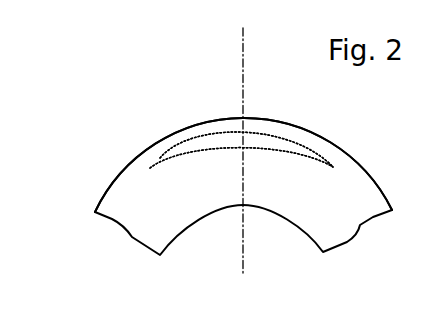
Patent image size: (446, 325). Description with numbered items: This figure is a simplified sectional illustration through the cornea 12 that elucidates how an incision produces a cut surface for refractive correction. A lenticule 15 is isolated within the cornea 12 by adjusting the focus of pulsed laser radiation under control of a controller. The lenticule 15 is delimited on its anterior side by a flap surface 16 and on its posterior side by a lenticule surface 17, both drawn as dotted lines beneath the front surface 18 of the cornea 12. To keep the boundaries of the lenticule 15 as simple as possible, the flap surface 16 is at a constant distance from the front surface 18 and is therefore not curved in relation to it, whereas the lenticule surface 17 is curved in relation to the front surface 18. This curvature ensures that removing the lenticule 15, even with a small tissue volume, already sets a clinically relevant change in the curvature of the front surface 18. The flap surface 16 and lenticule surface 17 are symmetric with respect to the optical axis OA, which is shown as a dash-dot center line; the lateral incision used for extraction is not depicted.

The optical axis OA is at (243, 35).
The cornea 12 is at (123, 198).
The lenticule 15 is at (225, 143).
The flap surface 16 is at (183, 147).
The lenticule surface 17 is at (310, 157).
The front surface 18 is at (315, 135).